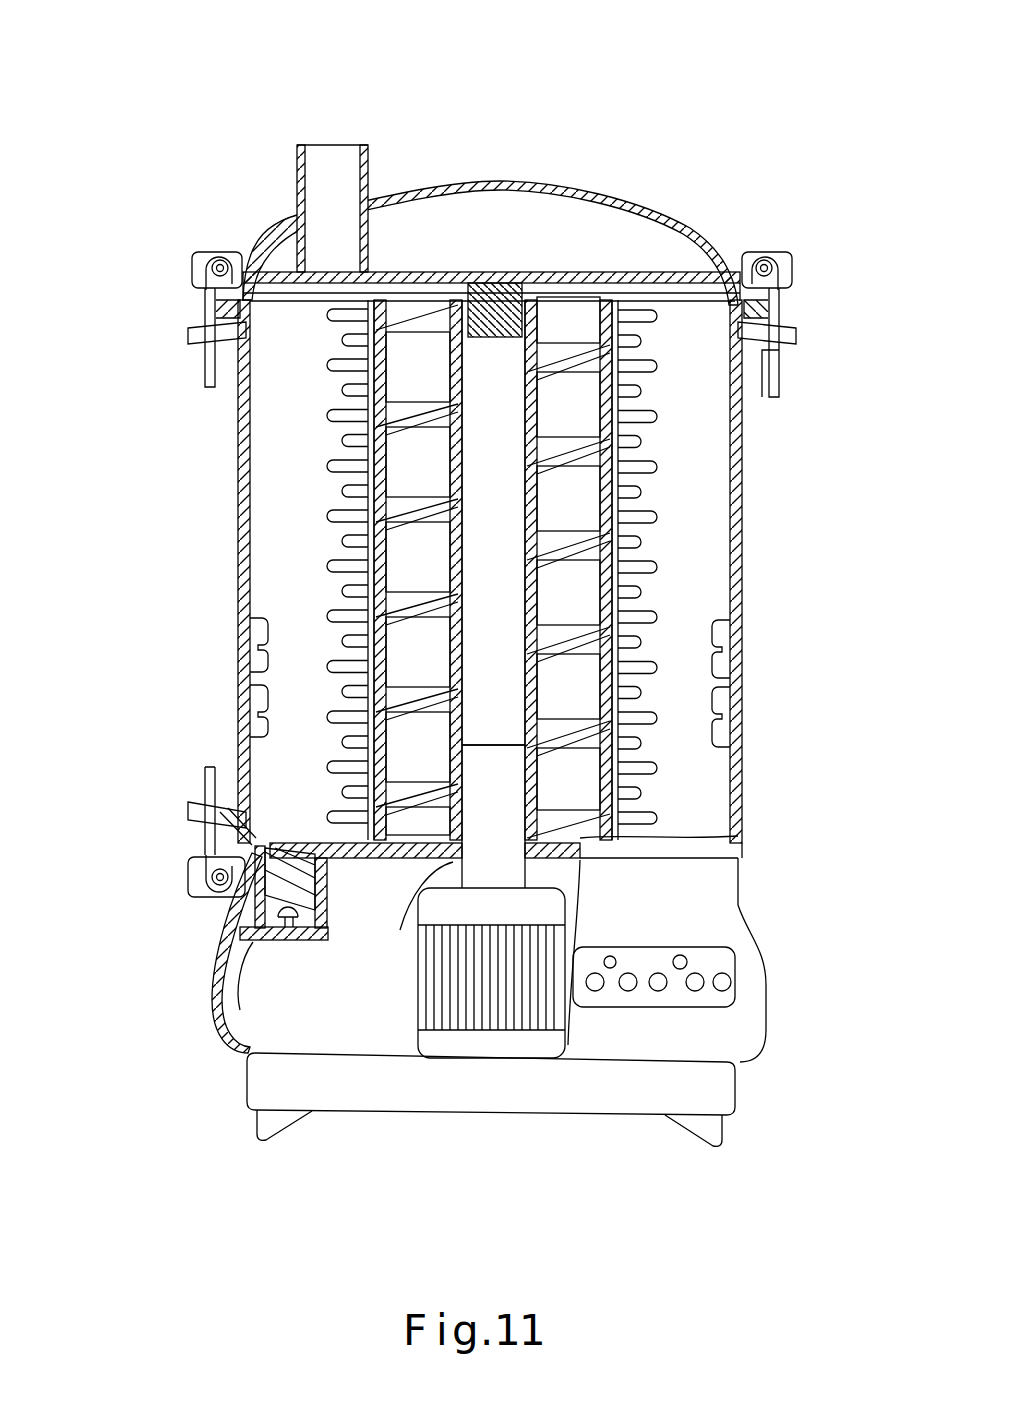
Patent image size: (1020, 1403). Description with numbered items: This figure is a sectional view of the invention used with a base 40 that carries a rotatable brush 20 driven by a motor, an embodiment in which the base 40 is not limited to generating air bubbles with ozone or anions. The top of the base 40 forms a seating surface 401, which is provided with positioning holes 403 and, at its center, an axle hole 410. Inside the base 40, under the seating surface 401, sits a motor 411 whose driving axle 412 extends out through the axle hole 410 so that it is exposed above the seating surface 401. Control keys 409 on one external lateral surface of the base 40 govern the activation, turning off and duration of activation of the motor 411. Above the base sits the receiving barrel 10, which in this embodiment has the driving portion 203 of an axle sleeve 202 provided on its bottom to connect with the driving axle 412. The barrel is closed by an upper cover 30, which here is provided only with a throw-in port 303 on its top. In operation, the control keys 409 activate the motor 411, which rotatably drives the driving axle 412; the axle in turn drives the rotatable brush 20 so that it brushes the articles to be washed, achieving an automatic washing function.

The receiving barrel 10 is at (748, 440).
The rotatable brush 20 is at (483, 585).
The upper cover 30 is at (574, 176).
The base 40 is at (480, 1045).
The axle sleeve 202 is at (537, 510).
The driving portion 203 is at (455, 747).
The throw-in port 303 is at (325, 165).
The seating surface 401 is at (360, 867).
The positioning holes 403 is at (255, 942).
The control keys 409 is at (712, 1000).
The axle hole 410 is at (400, 930).
The motor 411 is at (520, 1040).
The driving axle 412 is at (483, 785).